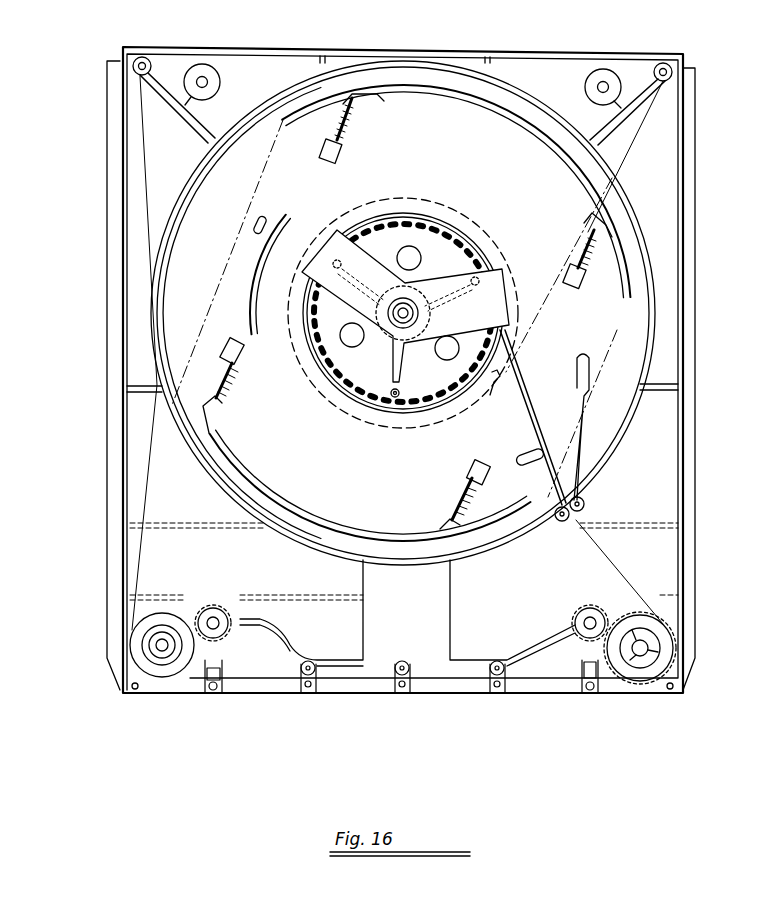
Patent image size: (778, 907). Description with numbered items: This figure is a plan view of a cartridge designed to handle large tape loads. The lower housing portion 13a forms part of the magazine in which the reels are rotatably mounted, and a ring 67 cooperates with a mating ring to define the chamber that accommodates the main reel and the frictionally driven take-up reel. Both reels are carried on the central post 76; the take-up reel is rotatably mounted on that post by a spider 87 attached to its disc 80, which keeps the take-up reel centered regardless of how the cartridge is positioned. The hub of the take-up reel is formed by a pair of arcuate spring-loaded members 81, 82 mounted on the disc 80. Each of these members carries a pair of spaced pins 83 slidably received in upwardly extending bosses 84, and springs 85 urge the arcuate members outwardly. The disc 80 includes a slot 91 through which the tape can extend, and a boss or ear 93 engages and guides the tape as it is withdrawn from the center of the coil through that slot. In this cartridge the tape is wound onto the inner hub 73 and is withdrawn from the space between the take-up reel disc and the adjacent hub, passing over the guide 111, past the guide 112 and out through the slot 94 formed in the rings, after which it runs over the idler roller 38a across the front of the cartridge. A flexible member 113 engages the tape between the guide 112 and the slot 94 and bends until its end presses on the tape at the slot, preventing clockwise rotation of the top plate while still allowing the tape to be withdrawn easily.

The lower housing portion 13a is at (110, 223).
The ring 67 is at (197, 175).
The arcuate spring-loaded member 81 is at (500, 105).
The arcuate spring-loaded member 82 is at (402, 533).
The boss 84 is at (345, 158).
The spring 85 is at (590, 234).
The pin 83 is at (468, 465).
The slot 91 is at (250, 301).
The boss or ear 93 is at (262, 215).
The inner hub 73 is at (455, 405).
The spider 87 is at (478, 322).
The post 76 is at (396, 327).
The disc 80 is at (374, 482).
The slot 94 is at (587, 521).
The guide 111 is at (498, 389).
The guide 112 is at (536, 451).
The flexible member 113 is at (578, 472).
The idler roller 38a is at (630, 622).